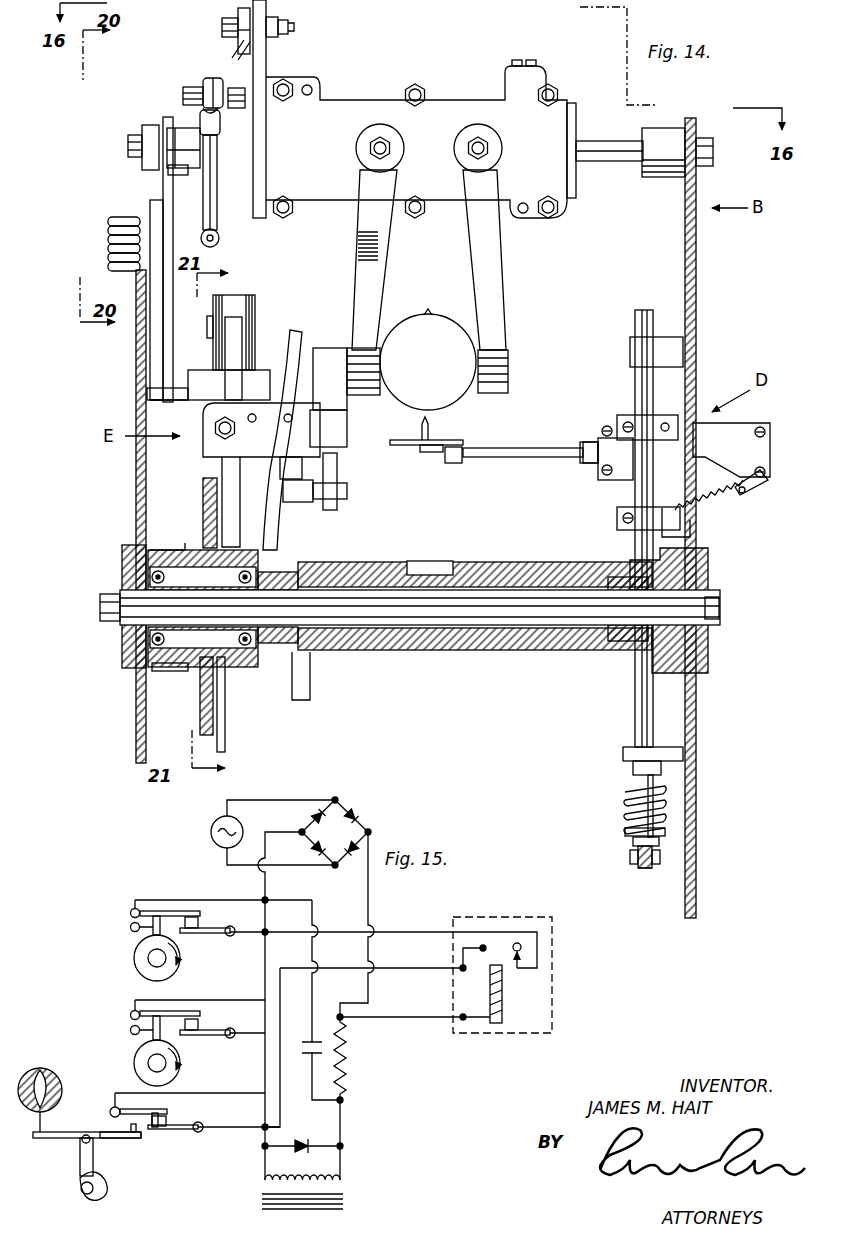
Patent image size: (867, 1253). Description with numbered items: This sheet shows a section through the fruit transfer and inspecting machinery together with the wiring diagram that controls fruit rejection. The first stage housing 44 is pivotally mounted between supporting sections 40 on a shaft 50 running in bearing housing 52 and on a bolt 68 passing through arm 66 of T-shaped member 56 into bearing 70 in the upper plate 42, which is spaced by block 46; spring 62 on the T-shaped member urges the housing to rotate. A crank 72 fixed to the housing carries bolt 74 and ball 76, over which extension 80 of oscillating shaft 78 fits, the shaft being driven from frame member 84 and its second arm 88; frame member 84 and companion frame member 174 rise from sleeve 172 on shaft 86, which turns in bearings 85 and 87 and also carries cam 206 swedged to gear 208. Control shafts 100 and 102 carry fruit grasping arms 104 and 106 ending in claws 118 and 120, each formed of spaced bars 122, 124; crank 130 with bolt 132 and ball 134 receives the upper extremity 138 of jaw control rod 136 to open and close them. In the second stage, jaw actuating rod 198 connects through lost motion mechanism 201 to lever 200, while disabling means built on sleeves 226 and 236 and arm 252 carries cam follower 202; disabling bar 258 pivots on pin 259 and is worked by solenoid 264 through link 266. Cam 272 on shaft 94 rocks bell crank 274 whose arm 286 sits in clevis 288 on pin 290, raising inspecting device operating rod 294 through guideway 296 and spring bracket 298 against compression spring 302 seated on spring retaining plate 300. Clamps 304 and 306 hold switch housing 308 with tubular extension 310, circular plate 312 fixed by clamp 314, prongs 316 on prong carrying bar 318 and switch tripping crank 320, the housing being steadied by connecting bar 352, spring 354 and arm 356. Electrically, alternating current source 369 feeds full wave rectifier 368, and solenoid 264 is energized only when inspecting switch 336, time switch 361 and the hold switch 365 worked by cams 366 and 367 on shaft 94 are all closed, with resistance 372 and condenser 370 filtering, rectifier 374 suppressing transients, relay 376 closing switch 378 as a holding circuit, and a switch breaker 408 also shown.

In FIG. 14, the transfer means supporting section 40 is at (140, 341).
In FIG. 14, the upper plate 42 is at (165, 290).
In FIG. 14, the first stage transfer means housing 44 is at (357, 98).
In FIG. 14, the block 46 is at (157, 360).
In FIG. 14, the shaft 50 is at (600, 143).
In FIG. 14, the bearing housing 52 is at (662, 177).
In FIG. 14, the T-shaped member 56 is at (190, 127).
In FIG. 14, the spring 62 is at (108, 243).
In FIG. 14, the arm 66 is at (150, 125).
In FIG. 14, the bolt 68 is at (128, 142).
In FIG. 14, the bearing 70 is at (176, 175).
In FIG. 14, the crank 72 is at (268, 61).
In FIG. 14, the bolt 74 is at (294, 27).
In FIG. 14, the ball 76 is at (222, 27).
In FIG. 14, the oscillating shaft 78 is at (238, 61).
In FIG. 14, the extension 80 is at (250, 1).
In FIG. 14, the frame member 84 is at (284, 542).
In FIG. 14, the bearing 85 is at (668, 643).
In FIG. 14, the shaft 86 is at (535, 622).
In FIG. 14, the bearing 87 is at (125, 645).
In FIG. 14, the second arm 88 is at (310, 678).
In FIG. 15, the shaft 94 is at (150, 962).
In FIG. 14, the control shaft 100 is at (386, 143).
In FIG. 14, the control shaft 102 is at (484, 143).
In FIG. 14, the fruit grasping arm 104 is at (360, 277).
In FIG. 14, the fruit grasping arm 106 is at (490, 262).
In FIG. 14, the fruit grasping claw 118 is at (384, 360).
In FIG. 14, the fruit grasping claw 120 is at (512, 352).
In FIG. 14, the bar 122 is at (350, 350).
In FIG. 14, the bar 124 is at (380, 376).
In FIG. 14, the crank 130 is at (213, 78).
In FIG. 14, the bolt 132 is at (186, 92).
In FIG. 14, the ball 134 is at (247, 100).
In FIG. 14, the jaw control rod 136 is at (222, 232).
In FIG. 14, the upper extremity 138 is at (212, 70).
In FIG. 14, the sleeve 172 is at (385, 645).
In FIG. 14, the frame member 174 is at (630, 552).
In FIG. 14, the jaw actuating rod 198 is at (340, 468).
In FIG. 14, the lever 200 is at (310, 502).
In FIG. 14, the lost motion mechanism 201 is at (322, 345).
In FIG. 14, the cam follower 202 is at (200, 536).
In FIG. 14, the cam 206 is at (204, 503).
In FIG. 14, the gear 208 is at (168, 672).
In FIG. 14, the sleeve 226 is at (298, 465).
In FIG. 14, the sleeve 236 is at (242, 468).
In FIG. 14, the arm 252 is at (213, 518).
In FIG. 14, the disabling bar 258 is at (233, 360).
In FIG. 14, the pin 259 is at (148, 392).
In FIG. 14, the solenoid 264 is at (257, 300).
In FIG. 15, the solenoid 264 is at (348, 1182).
In FIG. 14, the link 266 is at (227, 330).
In FIG. 15, the cam 272 is at (103, 1192).
In FIG. 14, the bell crank 274 is at (660, 842).
In FIG. 14, the arm 286 is at (643, 868).
In FIG. 14, the clevis 288 is at (633, 841).
In FIG. 14, the pin 290 is at (630, 855).
In FIG. 14, the inspecting device operating rod 294 is at (640, 700).
In FIG. 15, the inspecting device operating rod 294 is at (80, 1170).
In FIG. 14, the guideway 296 is at (663, 345).
In FIG. 14, the spring bracket 298 is at (683, 755).
In FIG. 14, the spring retaining plate 300 is at (625, 830).
In FIG. 14, the compression spring 302 is at (625, 810).
In FIG. 14, the clamp 304 is at (617, 517).
In FIG. 14, the clamp 306 is at (620, 424).
In FIG. 14, the inspecting device switch housing 308 is at (762, 450).
In FIG. 14, the hollow tubular extension 310 is at (508, 447).
In FIG. 14, the circular plate 312 is at (398, 440).
In FIG. 14, the clamp 314 is at (453, 463).
In FIG. 14, the prong 316 is at (431, 431).
In FIG. 15, the prong 316 is at (48, 1125).
In FIG. 14, the prong carrying bar 318 is at (440, 453).
In FIG. 15, the prong carrying bar 318 is at (60, 1138).
In FIG. 15, the switch tripping crank 320 is at (118, 1138).
In FIG. 15, the inspecting switch 336 is at (170, 1118).
In FIG. 14, the connecting bar 352 is at (744, 490).
In FIG. 14, the spring 354 is at (722, 500).
In FIG. 14, the arm 356 is at (690, 532).
In FIG. 15, the time switch 361 is at (200, 1024).
In FIG. 15, the switch 365 is at (200, 922).
In FIG. 15, the switch actuating cam 366 is at (134, 955).
In FIG. 15, the switch actuating cam 367 is at (134, 1060).
In FIG. 15, the full wave rectifier 368 is at (356, 826).
In FIG. 15, the alternating current source 369 is at (211, 833).
In FIG. 15, the condenser 370 is at (307, 1056).
In FIG. 15, the resistance 372 is at (348, 1050).
In FIG. 15, the rectifier 374 is at (303, 1140).
In FIG. 15, the relay 376 is at (503, 990).
In FIG. 15, the normally open switch 378 is at (540, 955).
In FIG. 15, the switch breaker 408 is at (148, 911).